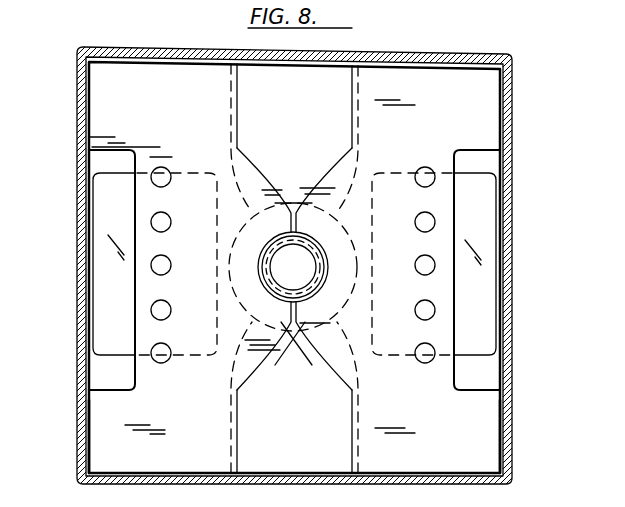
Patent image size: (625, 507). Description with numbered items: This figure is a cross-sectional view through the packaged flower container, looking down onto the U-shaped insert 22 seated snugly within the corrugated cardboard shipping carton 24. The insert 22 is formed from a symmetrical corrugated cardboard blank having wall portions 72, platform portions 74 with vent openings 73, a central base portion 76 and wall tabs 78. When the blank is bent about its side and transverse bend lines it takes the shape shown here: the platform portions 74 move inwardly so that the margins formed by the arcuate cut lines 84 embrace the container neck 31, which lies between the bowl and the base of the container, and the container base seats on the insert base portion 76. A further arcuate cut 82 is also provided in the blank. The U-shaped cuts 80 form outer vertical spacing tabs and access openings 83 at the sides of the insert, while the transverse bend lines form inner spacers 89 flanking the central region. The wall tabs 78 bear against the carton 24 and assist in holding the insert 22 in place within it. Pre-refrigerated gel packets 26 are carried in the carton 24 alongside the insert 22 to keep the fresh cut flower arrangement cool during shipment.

The U-shaped insert 22 is at (433, 92).
The shipping carton 24 is at (518, 112).
The pre-refrigerated gel packets 26 is at (103, 212).
The container neck 31 is at (301, 342).
The wall portions 72 is at (87, 425).
The vent openings 73 is at (169, 270).
The platform portions 74 is at (325, 373).
The central base portion 76 is at (303, 127).
The wall tabs 78 is at (160, 68).
The U-shaped cuts 80 is at (130, 285).
The arcuate cut 82 is at (326, 168).
The access openings 83 is at (105, 367).
The arcuate cut 84 is at (260, 255).
The inner spacers 89 is at (352, 78).